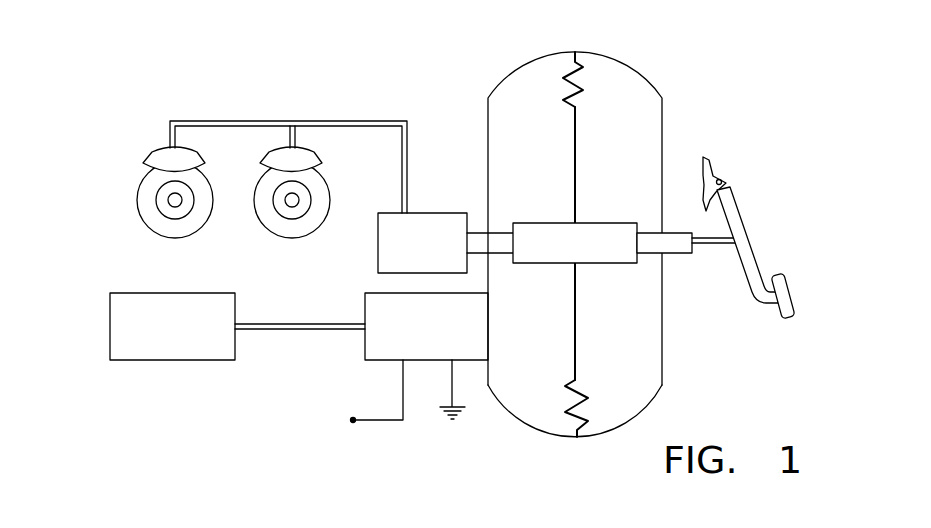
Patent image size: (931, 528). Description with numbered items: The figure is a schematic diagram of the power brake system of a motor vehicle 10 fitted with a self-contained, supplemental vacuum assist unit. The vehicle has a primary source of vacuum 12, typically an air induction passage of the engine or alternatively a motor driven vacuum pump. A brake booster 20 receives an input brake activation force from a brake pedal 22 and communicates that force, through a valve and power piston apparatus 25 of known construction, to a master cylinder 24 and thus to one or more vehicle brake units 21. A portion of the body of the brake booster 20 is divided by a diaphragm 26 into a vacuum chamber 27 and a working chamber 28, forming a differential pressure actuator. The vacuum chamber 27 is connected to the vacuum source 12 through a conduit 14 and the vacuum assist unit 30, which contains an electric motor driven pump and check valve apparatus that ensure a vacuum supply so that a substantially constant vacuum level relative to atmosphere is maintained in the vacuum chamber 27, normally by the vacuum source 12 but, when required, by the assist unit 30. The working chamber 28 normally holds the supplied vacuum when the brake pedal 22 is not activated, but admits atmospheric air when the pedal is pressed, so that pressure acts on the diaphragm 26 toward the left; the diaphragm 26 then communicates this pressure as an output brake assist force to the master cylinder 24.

The motor vehicle 10 is at (229, 63).
The primary source of vacuum 12 is at (130, 293).
The conduit 14 is at (287, 332).
The brake booster 20 is at (656, 77).
The vehicle brake units 21 is at (273, 158).
The brake pedal 22 is at (791, 297).
The master cylinder 24 is at (448, 213).
The valve and power piston apparatus 25 is at (622, 222).
The diaphragm 26 is at (572, 118).
The vacuum chamber 27 is at (553, 53).
The working chamber 28 is at (655, 357).
The vacuum assist unit 30 is at (359, 294).